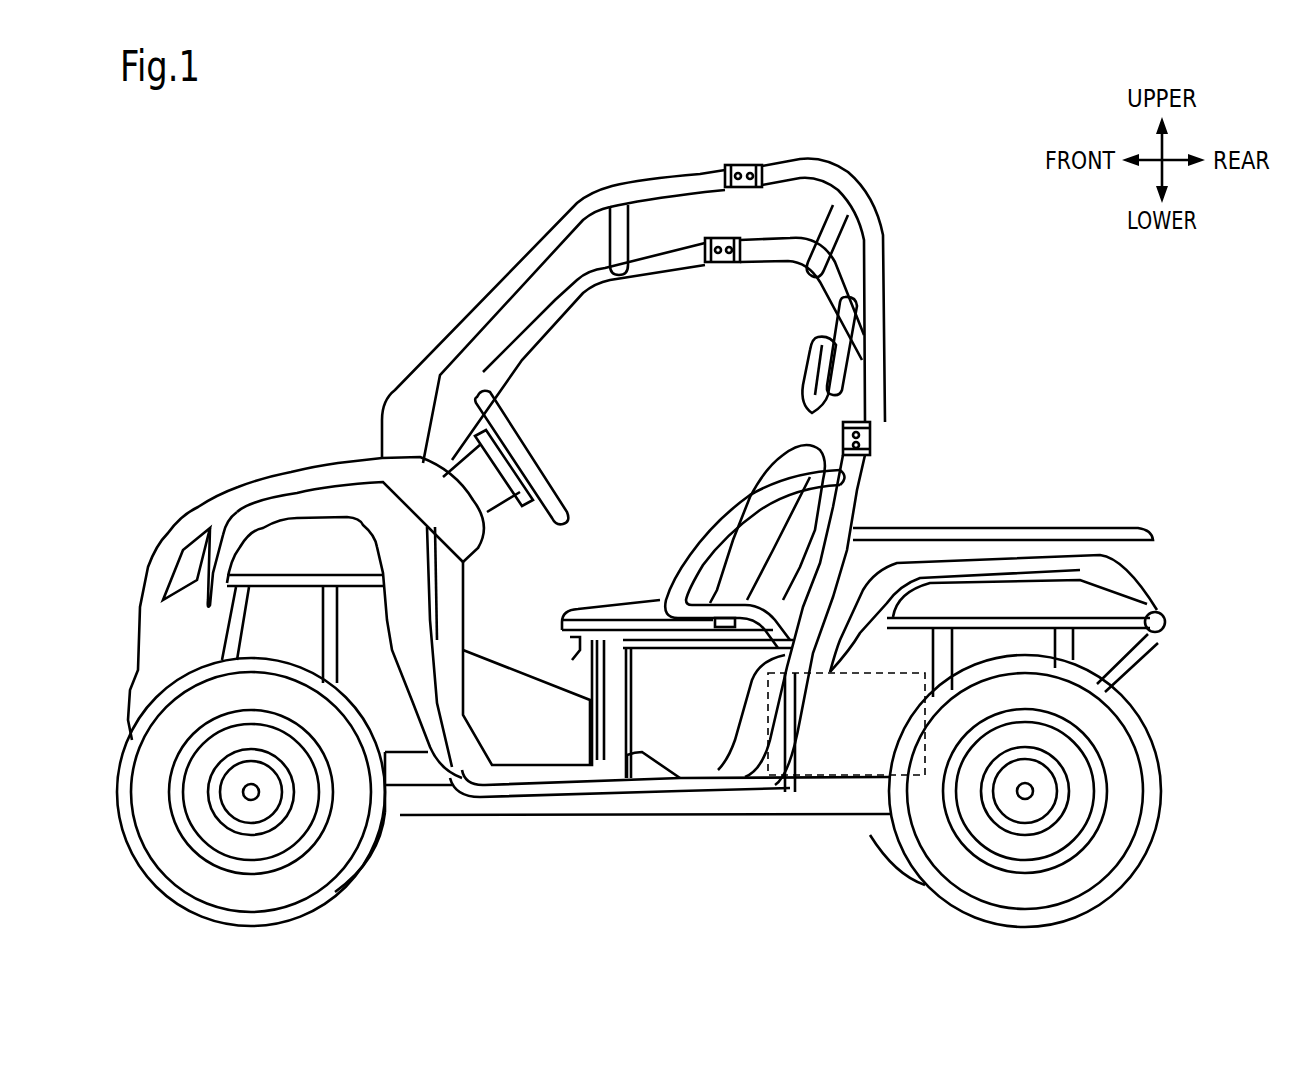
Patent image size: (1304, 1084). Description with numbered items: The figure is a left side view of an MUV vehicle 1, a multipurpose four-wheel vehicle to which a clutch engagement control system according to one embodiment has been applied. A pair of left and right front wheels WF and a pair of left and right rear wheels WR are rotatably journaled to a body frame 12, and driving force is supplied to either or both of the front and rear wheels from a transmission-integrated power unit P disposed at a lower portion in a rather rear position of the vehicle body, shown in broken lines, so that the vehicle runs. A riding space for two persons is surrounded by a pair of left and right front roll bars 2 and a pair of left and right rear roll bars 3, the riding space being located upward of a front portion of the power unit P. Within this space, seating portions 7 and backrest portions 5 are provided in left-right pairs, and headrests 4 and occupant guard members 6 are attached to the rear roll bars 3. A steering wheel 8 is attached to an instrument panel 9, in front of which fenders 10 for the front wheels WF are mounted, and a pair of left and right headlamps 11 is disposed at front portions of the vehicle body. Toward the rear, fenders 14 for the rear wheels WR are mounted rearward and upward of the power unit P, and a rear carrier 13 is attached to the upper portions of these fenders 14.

The MUV vehicle 1 is at (390, 240).
The front roll bars 2 is at (547, 247).
The rear roll bars 3 is at (876, 311).
The headrests 4 is at (835, 318).
The backrest portions 5 is at (783, 468).
The occupant guard members 6 is at (717, 533).
The seating portions 7 is at (622, 603).
The steering wheel 8 is at (521, 448).
The instrument panel 9 is at (477, 535).
The fenders 10 is at (297, 507).
The headlamps 11 is at (182, 572).
The body frame 12 is at (650, 805).
The rear carrier 13 is at (1063, 535).
The fenders 14 is at (1127, 585).
The power unit P is at (836, 784).
The front wheels WF is at (200, 872).
The rear wheels WR is at (1088, 872).